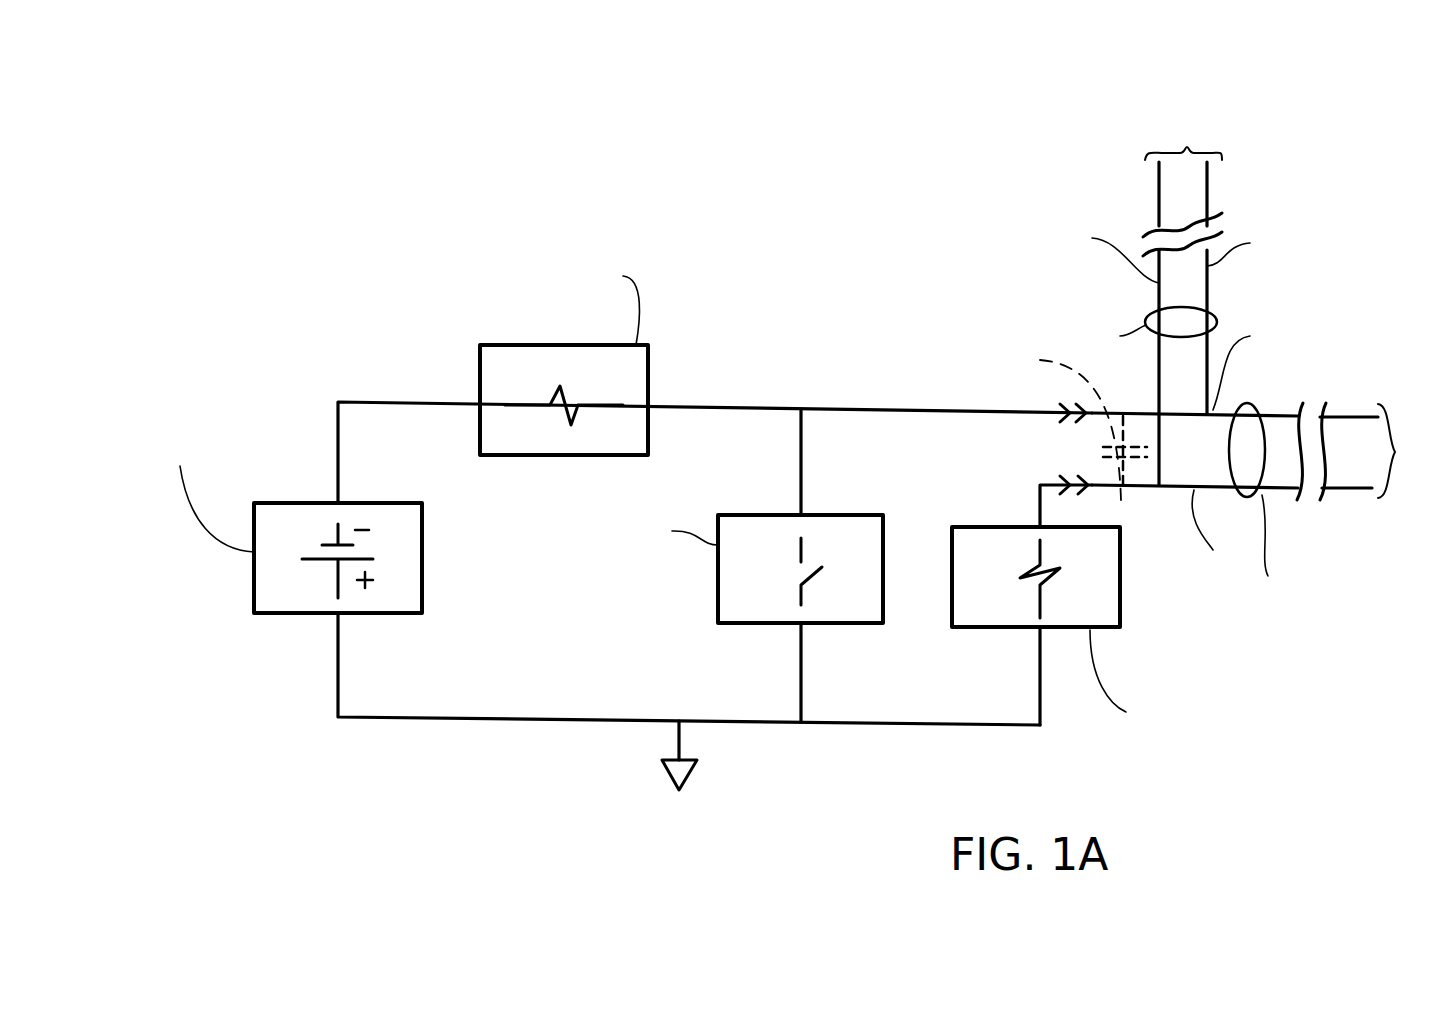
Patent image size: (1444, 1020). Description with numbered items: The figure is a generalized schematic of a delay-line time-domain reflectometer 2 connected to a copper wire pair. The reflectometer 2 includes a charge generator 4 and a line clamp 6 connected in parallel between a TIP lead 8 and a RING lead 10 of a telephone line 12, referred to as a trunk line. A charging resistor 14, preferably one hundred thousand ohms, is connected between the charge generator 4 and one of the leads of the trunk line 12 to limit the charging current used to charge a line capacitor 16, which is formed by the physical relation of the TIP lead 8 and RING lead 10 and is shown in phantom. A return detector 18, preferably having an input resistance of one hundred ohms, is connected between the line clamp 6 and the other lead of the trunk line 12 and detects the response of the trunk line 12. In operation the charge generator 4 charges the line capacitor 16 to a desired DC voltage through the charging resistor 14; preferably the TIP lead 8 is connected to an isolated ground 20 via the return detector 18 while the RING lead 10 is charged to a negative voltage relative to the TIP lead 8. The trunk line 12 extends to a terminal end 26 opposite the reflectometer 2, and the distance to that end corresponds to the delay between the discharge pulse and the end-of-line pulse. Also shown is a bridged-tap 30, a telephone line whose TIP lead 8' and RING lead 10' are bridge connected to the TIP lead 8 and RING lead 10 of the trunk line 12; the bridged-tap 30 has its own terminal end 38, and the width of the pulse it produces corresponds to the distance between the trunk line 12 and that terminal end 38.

The delay-line time-domain reflectometer 2 is at (382, 311).
The charge generator 4 is at (422, 589).
The line clamp 6 is at (843, 515).
The TIP lead 8 is at (1232, 527).
The TIP lead 8' is at (1101, 323).
The RING lead 10 is at (1236, 385).
The RING lead 10' is at (1261, 288).
The telephone line 12 is at (1247, 497).
The charging resistor 14 is at (650, 383).
The line capacitor 16 is at (1128, 505).
The return detector 18 is at (1120, 598).
The isolated ground 20 is at (690, 776).
The terminal end 26 is at (1366, 451).
The bridged-tap 30 is at (1216, 320).
The terminal end 38 is at (1182, 184).